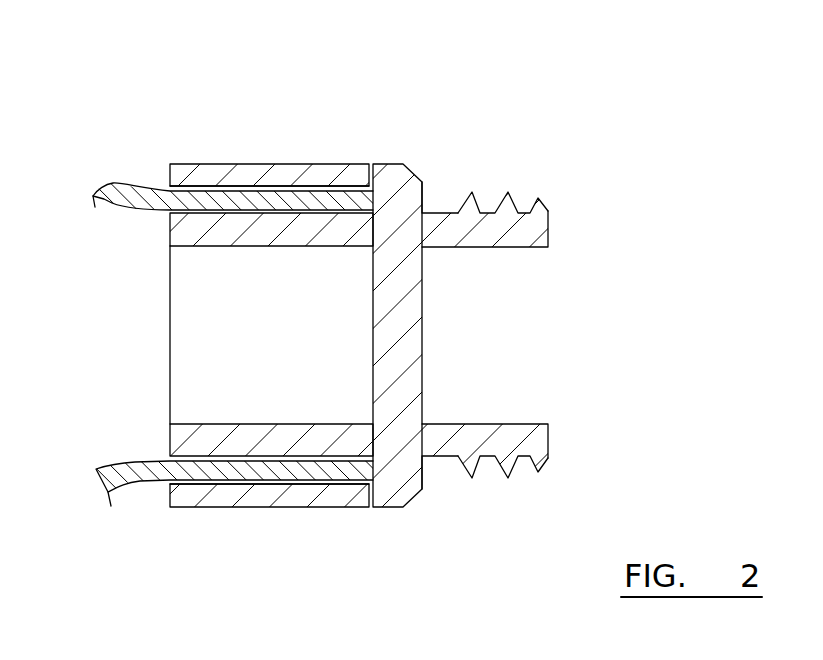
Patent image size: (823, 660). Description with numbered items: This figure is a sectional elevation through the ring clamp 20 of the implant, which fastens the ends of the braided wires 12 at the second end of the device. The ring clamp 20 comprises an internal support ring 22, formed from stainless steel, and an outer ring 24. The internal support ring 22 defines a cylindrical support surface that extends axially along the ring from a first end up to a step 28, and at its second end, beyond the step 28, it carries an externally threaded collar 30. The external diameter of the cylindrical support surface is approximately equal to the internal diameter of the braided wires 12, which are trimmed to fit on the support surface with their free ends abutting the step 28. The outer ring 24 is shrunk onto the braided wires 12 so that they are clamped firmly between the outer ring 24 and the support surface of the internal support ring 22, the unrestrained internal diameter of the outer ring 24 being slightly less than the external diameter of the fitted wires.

The braided wires 12 is at (148, 189).
The ring clamp 20 is at (432, 162).
The internal support ring 22 is at (228, 248).
The outer ring 24 is at (220, 163).
The step 28 is at (362, 177).
The externally threaded collar 30 is at (521, 203).